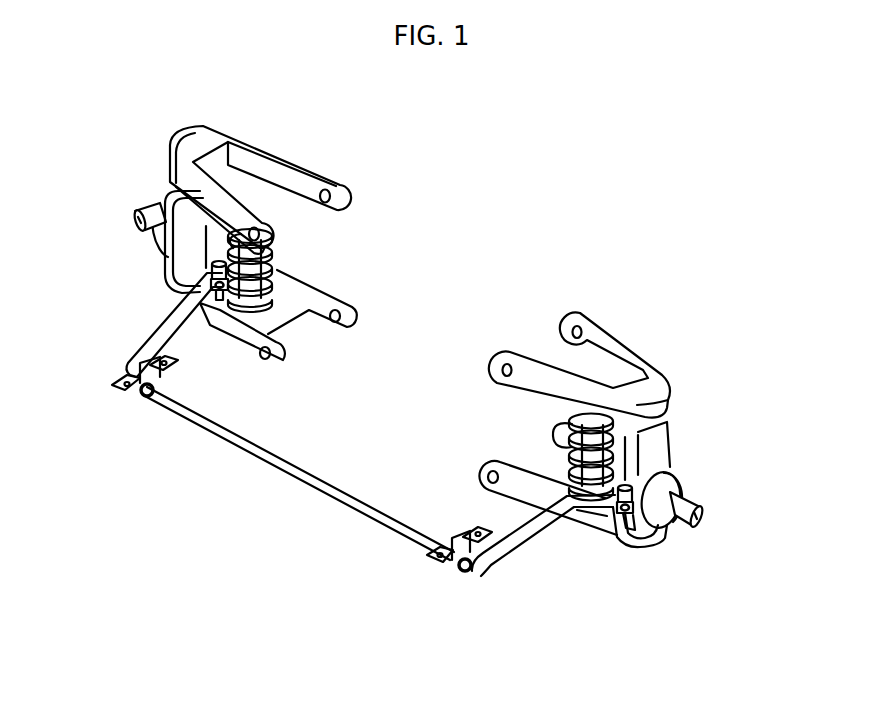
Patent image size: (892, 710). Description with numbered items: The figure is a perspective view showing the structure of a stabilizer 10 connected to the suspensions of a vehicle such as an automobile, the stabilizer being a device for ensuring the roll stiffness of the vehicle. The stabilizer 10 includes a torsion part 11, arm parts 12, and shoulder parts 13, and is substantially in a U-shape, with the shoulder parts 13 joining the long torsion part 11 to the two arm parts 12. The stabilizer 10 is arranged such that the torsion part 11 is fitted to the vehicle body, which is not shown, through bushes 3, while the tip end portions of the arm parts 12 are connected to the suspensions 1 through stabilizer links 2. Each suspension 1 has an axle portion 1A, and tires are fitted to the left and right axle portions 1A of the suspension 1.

The suspension 1 is at (258, 138).
The axle portion 1A is at (136, 211).
The stabilizer link 2 is at (215, 300).
The bush 3 is at (141, 394).
The stabilizer 10 is at (344, 454).
The torsion part 11 is at (290, 465).
The arm part 12 is at (167, 330).
The shoulder part 13 is at (125, 372).